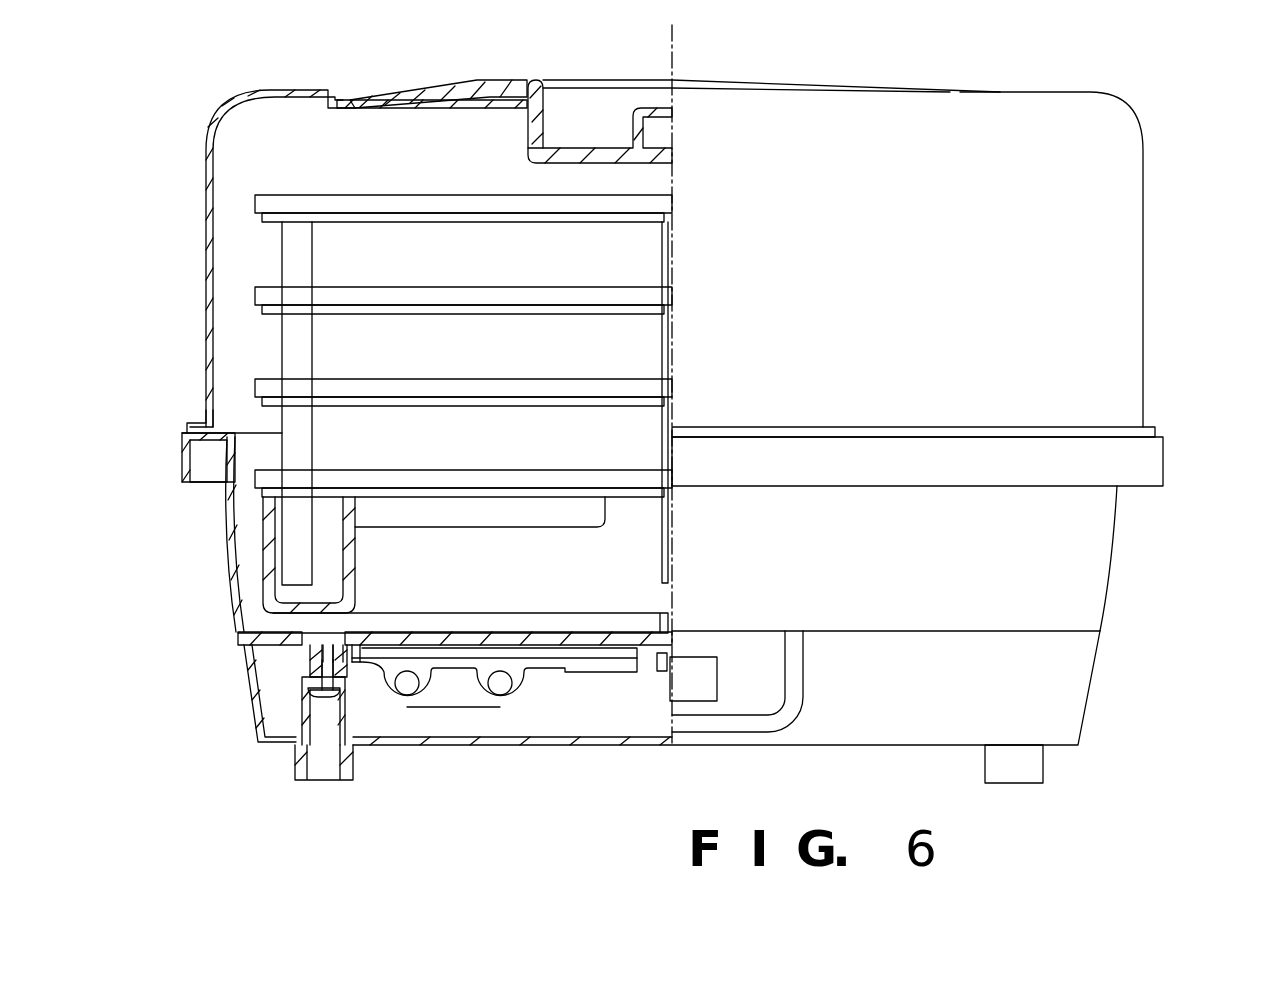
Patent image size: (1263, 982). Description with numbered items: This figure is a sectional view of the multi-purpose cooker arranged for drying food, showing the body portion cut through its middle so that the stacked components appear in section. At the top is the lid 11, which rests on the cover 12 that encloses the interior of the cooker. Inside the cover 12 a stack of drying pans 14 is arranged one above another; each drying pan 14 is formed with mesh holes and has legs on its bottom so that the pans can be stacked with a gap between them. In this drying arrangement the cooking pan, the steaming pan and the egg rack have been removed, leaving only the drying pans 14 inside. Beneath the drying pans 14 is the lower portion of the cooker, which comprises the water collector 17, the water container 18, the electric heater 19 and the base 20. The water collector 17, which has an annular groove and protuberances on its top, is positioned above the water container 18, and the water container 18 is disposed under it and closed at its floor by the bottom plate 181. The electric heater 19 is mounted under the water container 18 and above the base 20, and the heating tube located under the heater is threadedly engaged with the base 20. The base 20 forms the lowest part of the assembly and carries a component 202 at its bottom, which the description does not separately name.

The lid 11 is at (890, 80).
The cover 12 is at (1140, 265).
The drying pans 14 is at (262, 205).
The water collector 17 is at (370, 510).
The water container 18 is at (1110, 575).
The bottom plate 181 is at (412, 650).
The electric heater 19 is at (307, 650).
The base 20 is at (1083, 705).
The post 202 is at (300, 707).